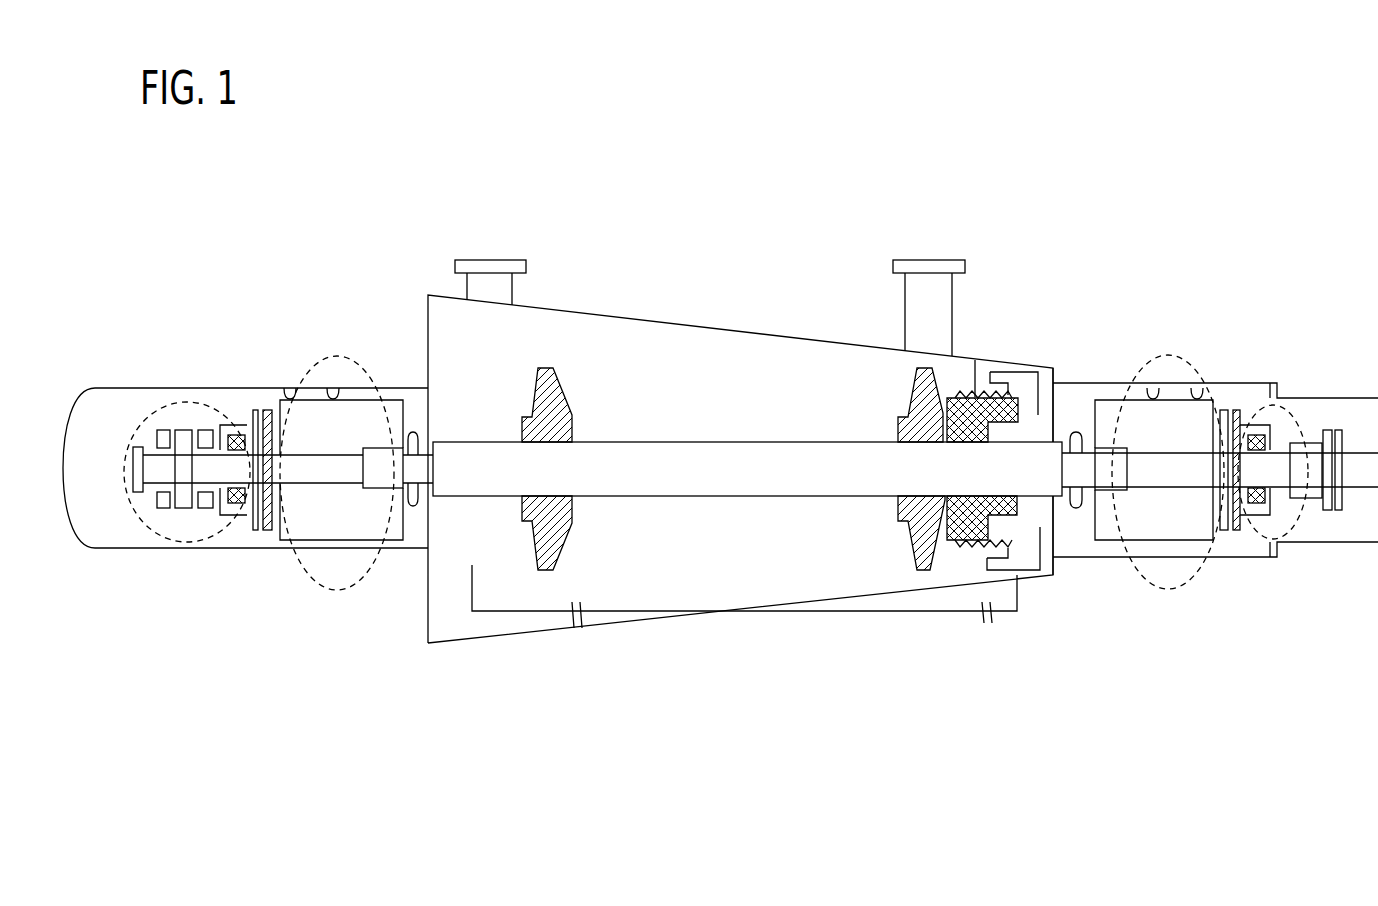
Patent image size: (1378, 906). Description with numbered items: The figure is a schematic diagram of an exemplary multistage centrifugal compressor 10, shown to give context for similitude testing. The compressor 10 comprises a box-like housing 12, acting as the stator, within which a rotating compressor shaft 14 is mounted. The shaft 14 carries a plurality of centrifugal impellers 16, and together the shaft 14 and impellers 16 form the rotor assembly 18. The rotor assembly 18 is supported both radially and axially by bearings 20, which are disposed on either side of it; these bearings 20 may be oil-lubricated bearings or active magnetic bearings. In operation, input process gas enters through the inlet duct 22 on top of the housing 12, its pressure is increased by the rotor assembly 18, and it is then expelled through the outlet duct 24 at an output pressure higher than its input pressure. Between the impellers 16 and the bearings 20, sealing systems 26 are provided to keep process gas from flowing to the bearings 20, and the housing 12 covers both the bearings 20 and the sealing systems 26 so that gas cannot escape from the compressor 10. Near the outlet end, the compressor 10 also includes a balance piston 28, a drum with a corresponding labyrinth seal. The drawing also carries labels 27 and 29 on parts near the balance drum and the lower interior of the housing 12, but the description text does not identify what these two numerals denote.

The multistage centrifugal compressor 10 is at (538, 122).
The housing 12 is at (710, 323).
The compressor shaft 14 is at (1050, 442).
The centrifugal impellers 16 is at (548, 572).
The rotor assembly 18 is at (732, 485).
The bearings 20 is at (182, 402).
The inlet duct 22 is at (475, 258).
The outlet duct 24 is at (925, 258).
The sealing systems 26 is at (330, 355).
The lower seal 27 is at (1005, 538).
The balance piston 28 is at (972, 397).
The tray 29 is at (845, 612).